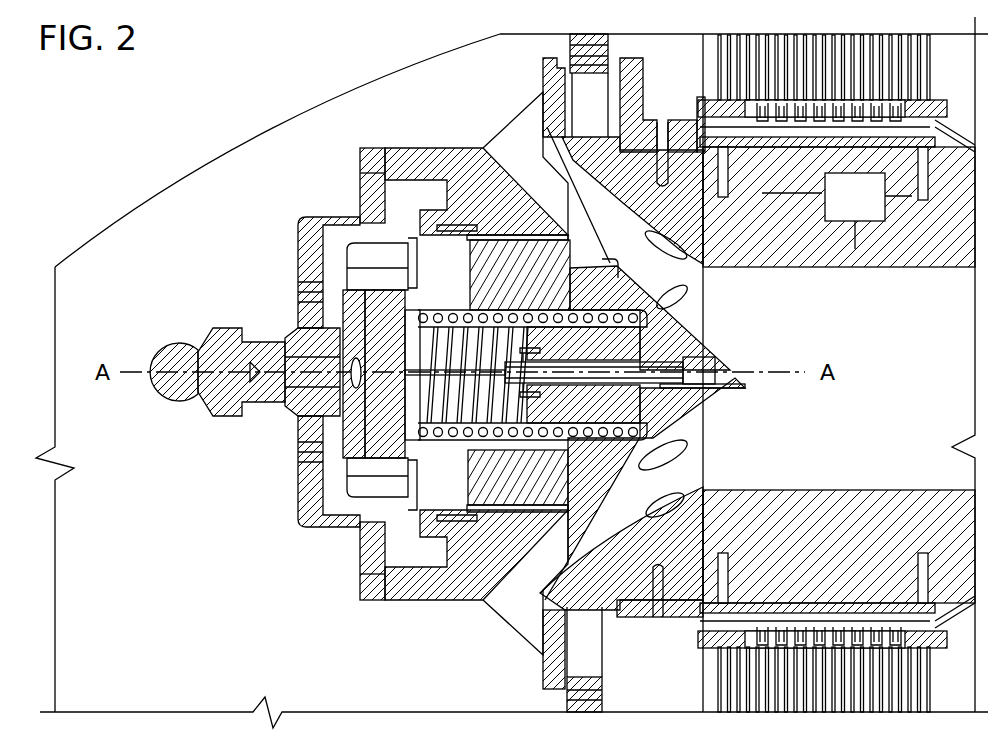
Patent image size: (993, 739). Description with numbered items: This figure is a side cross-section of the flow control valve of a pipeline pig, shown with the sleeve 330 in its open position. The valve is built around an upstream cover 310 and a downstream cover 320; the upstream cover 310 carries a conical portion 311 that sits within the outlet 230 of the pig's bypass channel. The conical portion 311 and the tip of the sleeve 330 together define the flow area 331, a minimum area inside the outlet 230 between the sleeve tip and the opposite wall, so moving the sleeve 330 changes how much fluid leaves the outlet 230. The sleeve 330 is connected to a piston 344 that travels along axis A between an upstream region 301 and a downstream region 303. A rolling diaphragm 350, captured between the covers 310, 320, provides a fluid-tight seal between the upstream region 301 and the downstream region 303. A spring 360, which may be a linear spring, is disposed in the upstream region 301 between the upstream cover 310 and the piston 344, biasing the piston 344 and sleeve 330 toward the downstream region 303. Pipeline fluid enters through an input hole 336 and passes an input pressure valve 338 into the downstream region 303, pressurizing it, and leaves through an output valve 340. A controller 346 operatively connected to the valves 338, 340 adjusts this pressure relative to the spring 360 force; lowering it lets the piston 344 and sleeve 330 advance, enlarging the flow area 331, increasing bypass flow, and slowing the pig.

The outlet 230 is at (637, 200).
The upstream region 301 is at (506, 437).
The downstream region 303 is at (345, 400).
The upstream cover 310 is at (540, 473).
The conical portion 311 is at (667, 400).
The downstream cover 320 is at (410, 453).
The sleeve 330 is at (528, 230).
The flow area 331 is at (620, 245).
The input or hole 336 is at (705, 265).
The input pressure valve 338 is at (375, 268).
The output valve 340 is at (368, 480).
The piston 344 is at (410, 456).
The controller 346 is at (875, 211).
The rolling diaphragm 350 is at (436, 440).
The spring 360 is at (467, 310).